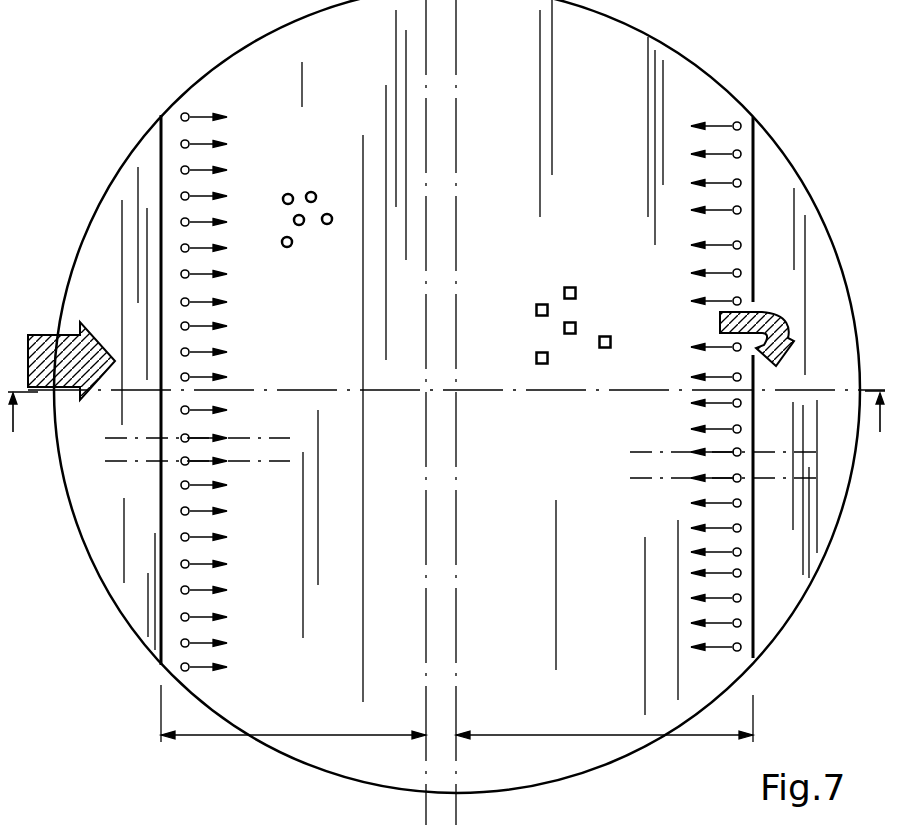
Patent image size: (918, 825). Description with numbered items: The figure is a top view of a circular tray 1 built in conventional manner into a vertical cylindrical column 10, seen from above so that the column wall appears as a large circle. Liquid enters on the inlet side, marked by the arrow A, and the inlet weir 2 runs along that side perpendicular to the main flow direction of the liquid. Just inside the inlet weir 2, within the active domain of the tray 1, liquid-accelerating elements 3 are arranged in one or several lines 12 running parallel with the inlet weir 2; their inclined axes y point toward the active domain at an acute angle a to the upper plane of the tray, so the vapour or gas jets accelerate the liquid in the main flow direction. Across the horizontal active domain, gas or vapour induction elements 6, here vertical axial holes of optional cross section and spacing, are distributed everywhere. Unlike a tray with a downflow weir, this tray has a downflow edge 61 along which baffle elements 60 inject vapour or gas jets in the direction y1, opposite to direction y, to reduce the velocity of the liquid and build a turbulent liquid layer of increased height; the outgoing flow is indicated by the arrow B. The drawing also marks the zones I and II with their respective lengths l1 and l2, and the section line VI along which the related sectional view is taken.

The circular tray 1 is at (622, 110).
The inlet weir 2 is at (161, 224).
The liquid-accelerating elements 3 is at (73, 548).
The gas or vapour induction elements 6 is at (310, 192).
The column 10 is at (152, 120).
The lines of liquid-accelerating elements 12 is at (188, 80).
The baffle element 60 is at (742, 212).
The downflow edge 61 is at (756, 268).
The angle of vapour or gas jets a is at (200, 144).
The axis of vapour or gas jets y is at (128, 438).
The direction of decelerating vapour or gas flow y1 is at (812, 452).
The inlet direction A is at (48, 350).
The outflow direction B is at (772, 312).
The first zone I is at (185, 692).
The second zone II is at (738, 680).
The section line VI is at (445, 426).
The length of first zone l1 is at (303, 737).
The length of second zone l2 is at (568, 737).